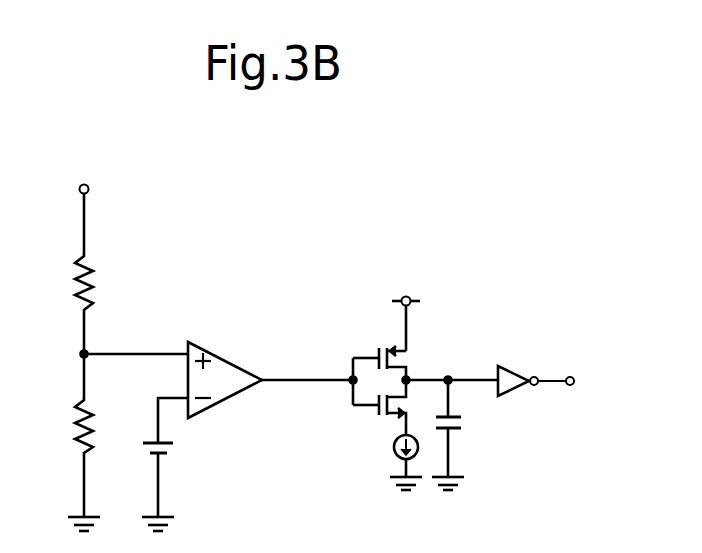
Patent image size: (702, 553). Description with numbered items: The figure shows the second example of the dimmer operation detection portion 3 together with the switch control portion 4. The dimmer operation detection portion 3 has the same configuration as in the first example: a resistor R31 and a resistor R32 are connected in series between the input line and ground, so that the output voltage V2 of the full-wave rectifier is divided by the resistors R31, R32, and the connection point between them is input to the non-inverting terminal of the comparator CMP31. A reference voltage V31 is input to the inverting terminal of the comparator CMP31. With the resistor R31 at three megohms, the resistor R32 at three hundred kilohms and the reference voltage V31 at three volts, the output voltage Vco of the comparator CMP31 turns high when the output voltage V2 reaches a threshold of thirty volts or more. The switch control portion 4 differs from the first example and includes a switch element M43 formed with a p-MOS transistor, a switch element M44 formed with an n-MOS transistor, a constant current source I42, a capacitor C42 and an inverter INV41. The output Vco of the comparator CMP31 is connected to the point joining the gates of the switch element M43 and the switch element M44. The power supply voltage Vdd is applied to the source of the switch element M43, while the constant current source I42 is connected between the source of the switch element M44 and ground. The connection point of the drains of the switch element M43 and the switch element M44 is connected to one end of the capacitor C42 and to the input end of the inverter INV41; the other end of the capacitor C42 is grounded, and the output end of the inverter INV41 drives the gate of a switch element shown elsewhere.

The dimmer operation detection portion 3 is at (212, 211).
The switch control portion 4 is at (446, 249).
The output voltage of the full-wave rectifier V2 is at (86, 203).
The resistor R31 is at (109, 283).
The resistor R32 is at (109, 427).
The comparator CMP31 is at (212, 350).
The reference voltage V31 is at (178, 457).
The output voltage of the comparator Vco is at (307, 364).
The power supply voltage Vdd is at (428, 320).
The switch element M43 is at (405, 363).
The switch element M44 is at (366, 407).
The constant current source I42 is at (394, 445).
The capacitor C42 is at (472, 428).
The inverter INV41 is at (513, 368).